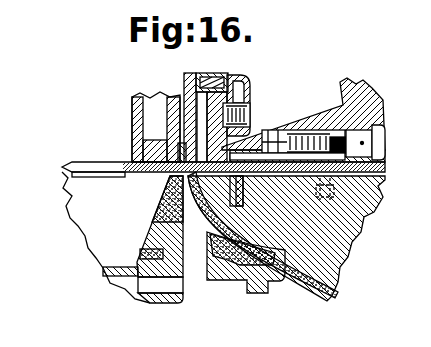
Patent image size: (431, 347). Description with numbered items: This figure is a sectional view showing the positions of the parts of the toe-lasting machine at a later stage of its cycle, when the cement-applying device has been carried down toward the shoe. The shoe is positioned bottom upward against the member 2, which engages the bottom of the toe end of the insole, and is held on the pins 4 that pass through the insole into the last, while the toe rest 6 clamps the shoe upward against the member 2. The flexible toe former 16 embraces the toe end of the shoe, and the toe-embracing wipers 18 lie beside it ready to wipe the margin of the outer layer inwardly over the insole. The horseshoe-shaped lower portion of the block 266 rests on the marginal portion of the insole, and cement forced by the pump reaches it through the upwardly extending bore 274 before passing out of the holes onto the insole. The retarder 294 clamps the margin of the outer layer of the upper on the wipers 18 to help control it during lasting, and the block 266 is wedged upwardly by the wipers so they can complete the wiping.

The member 2 is at (345, 166).
The pins 4 is at (210, 224).
The toe rest 6 is at (236, 266).
The flexible toe former 16 is at (162, 209).
The toe-embracing wipers 18 is at (158, 178).
The block 266 is at (248, 120).
The upwardly extending bore 274 is at (193, 94).
The retarder 294 is at (178, 155).